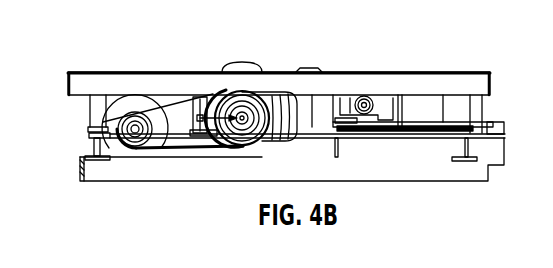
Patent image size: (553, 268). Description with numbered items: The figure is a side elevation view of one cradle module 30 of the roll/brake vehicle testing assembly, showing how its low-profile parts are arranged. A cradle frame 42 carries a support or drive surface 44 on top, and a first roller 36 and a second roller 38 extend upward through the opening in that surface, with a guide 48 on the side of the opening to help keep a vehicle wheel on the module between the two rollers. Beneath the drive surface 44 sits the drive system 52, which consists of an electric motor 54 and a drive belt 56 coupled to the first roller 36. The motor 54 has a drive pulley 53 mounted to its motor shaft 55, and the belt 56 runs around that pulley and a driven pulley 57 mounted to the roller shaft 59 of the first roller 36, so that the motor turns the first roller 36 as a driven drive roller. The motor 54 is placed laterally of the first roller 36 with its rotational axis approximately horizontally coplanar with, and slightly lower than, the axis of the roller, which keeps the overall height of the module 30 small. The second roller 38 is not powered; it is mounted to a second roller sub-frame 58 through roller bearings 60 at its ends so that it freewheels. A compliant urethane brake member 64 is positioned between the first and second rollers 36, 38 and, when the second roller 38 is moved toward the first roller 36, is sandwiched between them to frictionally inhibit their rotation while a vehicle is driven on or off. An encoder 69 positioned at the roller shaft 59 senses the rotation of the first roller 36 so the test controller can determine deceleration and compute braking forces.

The cradle module 30 is at (456, 64).
The first roller 36 is at (233, 63).
The second roller 38 is at (387, 100).
The cradle frame 42 is at (461, 182).
The drive surface 44 is at (132, 70).
The guide 48 is at (310, 67).
The drive system 52 is at (172, 155).
The drive pulley 53 is at (87, 134).
The electric motor 54 is at (118, 112).
The motor shaft 55 is at (133, 148).
The drive belt 56 is at (186, 96).
The driven pulley 57 is at (260, 140).
The second roller sub-frame 58 is at (430, 120).
The roller shaft 59 is at (242, 126).
The roller bearing 60 is at (352, 112).
The brake member 64 is at (292, 100).
The encoder 69 is at (225, 137).